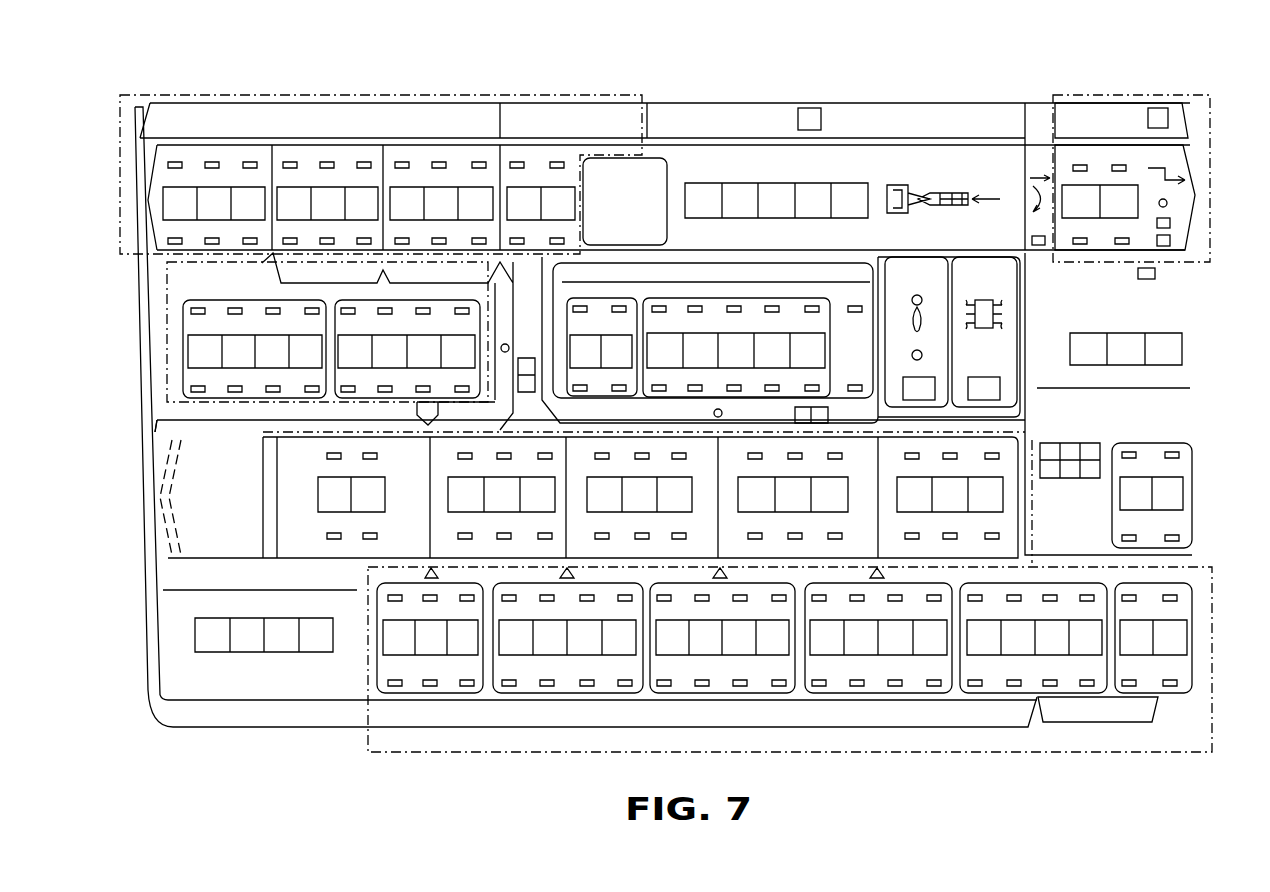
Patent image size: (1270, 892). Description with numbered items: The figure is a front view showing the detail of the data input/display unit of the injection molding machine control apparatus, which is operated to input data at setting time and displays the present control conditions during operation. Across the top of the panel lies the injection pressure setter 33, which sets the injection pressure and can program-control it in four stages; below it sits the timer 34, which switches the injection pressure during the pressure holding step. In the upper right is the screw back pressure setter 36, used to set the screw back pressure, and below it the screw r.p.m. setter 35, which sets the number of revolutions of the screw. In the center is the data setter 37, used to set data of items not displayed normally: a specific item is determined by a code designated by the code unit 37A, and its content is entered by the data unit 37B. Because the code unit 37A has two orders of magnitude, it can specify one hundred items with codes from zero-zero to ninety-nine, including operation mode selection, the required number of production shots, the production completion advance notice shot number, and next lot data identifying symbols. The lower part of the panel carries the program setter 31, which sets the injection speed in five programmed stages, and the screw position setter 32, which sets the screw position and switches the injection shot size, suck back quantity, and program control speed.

The program setter 31 is at (345, 562).
The screw position setter 32 is at (1232, 735).
The injection pressure setter 33 is at (295, 93).
The timer 34 is at (166, 324).
The screw r.p.m. setter 35 is at (1192, 490).
The screw back pressure setter 36 is at (1230, 92).
The data setter 37 is at (872, 262).
The code unit 37A is at (625, 295).
The data unit 37B is at (797, 292).